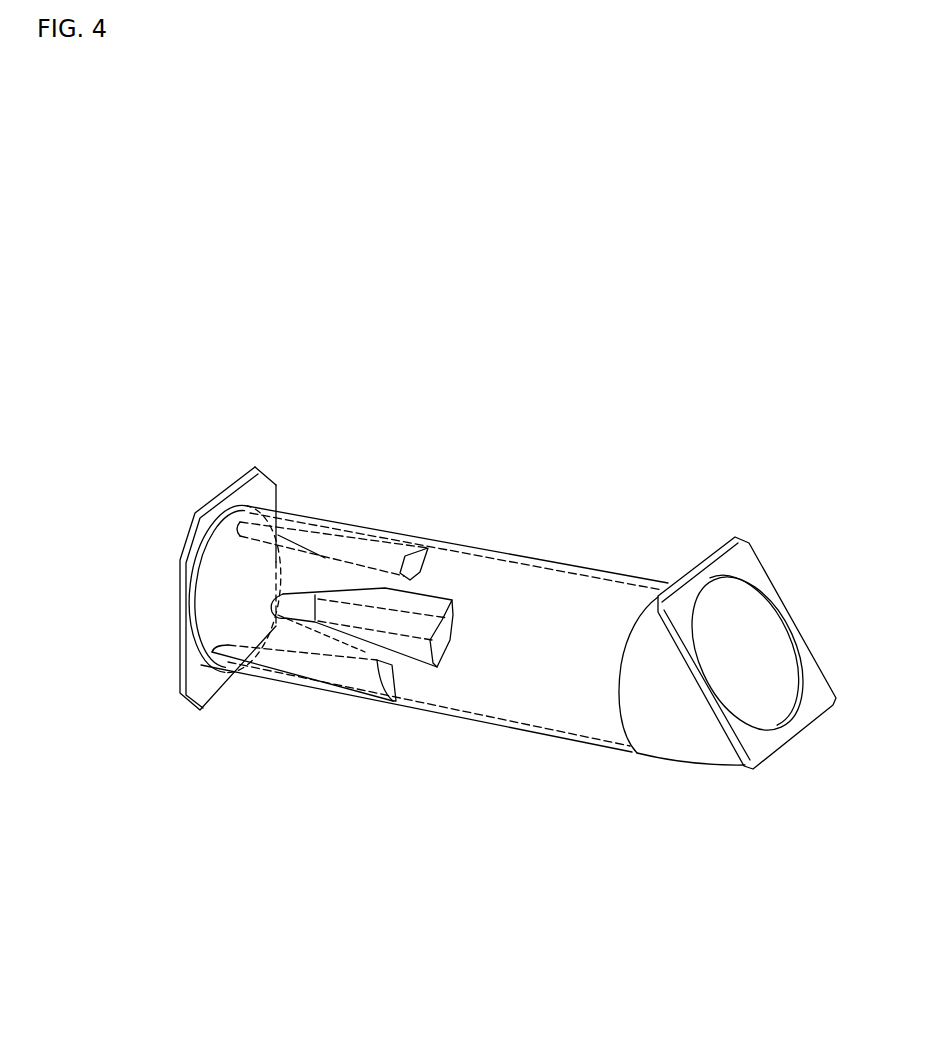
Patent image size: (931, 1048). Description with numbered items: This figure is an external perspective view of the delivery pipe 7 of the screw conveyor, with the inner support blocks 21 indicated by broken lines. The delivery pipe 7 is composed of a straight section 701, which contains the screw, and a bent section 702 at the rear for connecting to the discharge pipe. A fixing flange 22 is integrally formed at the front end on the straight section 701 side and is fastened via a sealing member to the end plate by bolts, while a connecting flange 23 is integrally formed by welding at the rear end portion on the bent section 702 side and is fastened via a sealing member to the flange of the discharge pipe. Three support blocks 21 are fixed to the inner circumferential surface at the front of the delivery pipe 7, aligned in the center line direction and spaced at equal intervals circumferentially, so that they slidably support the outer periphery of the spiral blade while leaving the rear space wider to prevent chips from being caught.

The delivery pipe 7 is at (467, 691).
The straight section 701 is at (559, 703).
The bent section 702 is at (682, 713).
The support blocks 21 is at (368, 540).
The fixing flange 22 is at (256, 487).
The connecting flange 23 is at (727, 567).